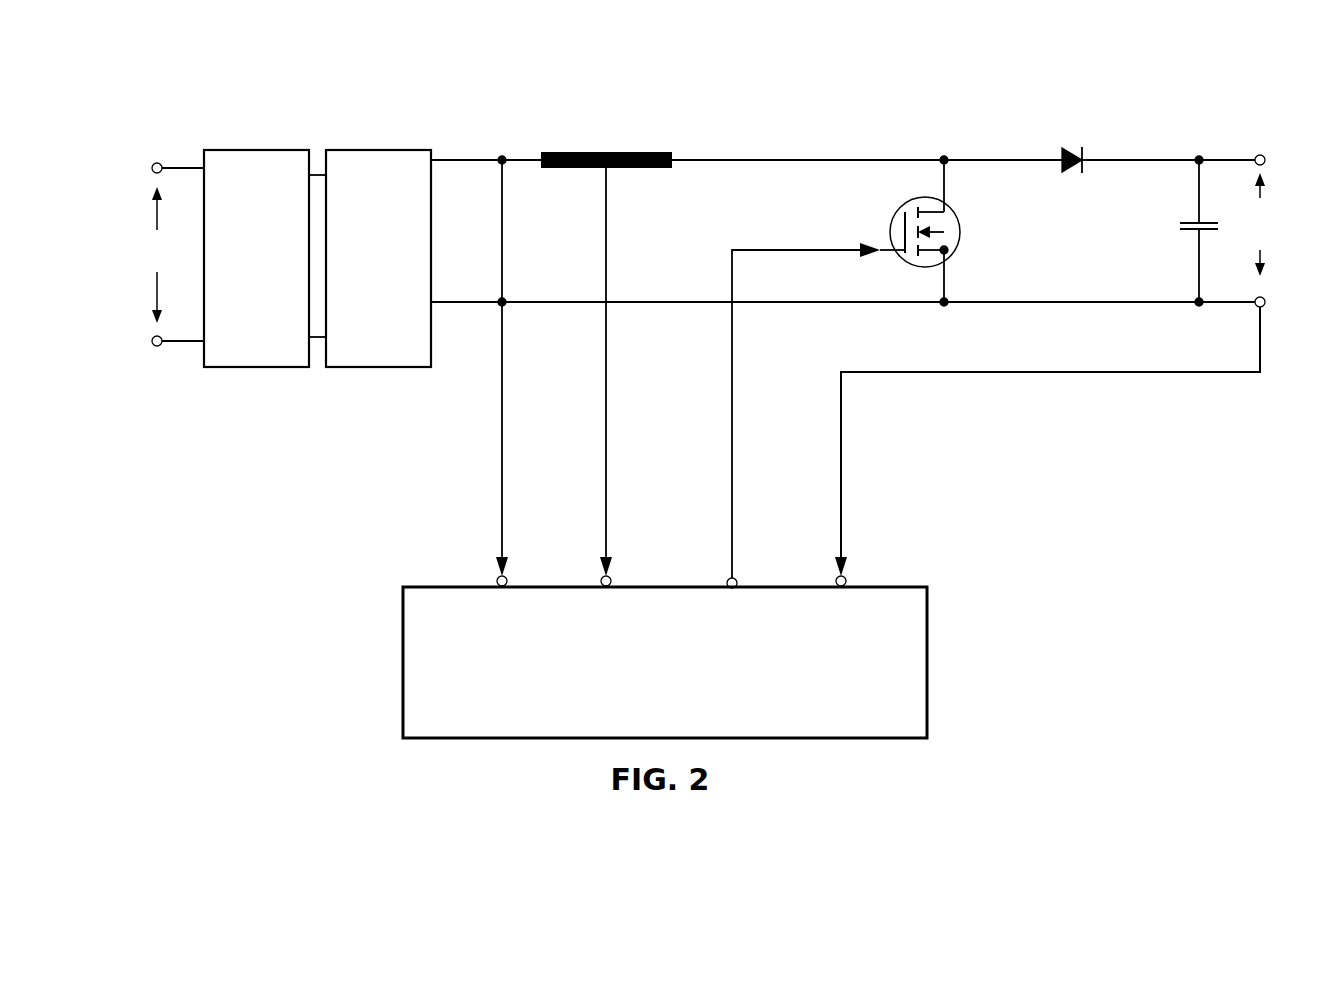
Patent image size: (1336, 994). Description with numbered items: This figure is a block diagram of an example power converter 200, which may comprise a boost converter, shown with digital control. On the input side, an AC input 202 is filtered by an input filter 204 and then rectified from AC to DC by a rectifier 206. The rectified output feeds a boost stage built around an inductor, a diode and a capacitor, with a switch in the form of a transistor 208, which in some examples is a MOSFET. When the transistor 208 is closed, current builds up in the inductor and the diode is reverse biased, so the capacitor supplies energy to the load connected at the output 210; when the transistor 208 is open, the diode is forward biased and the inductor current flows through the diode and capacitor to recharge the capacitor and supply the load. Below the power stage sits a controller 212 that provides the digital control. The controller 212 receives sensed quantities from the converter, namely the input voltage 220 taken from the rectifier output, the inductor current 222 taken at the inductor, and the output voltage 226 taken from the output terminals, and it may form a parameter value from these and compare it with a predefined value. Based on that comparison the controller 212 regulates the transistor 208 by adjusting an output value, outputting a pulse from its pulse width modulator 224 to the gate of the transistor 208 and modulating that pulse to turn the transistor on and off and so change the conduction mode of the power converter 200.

The power converter 200 is at (900, 62).
The AC input 202 is at (100, 215).
The input filter 204 is at (256, 258).
The rectifier 206 is at (378, 258).
The transistor 208 is at (966, 252).
The output terminals 210 is at (1296, 199).
The controller 212 is at (665, 662).
The input voltage 220 is at (506, 577).
The inductor current 222 is at (611, 577).
The pulse width modulator (PWM) 224 is at (737, 580).
The output voltage 226 is at (846, 578).